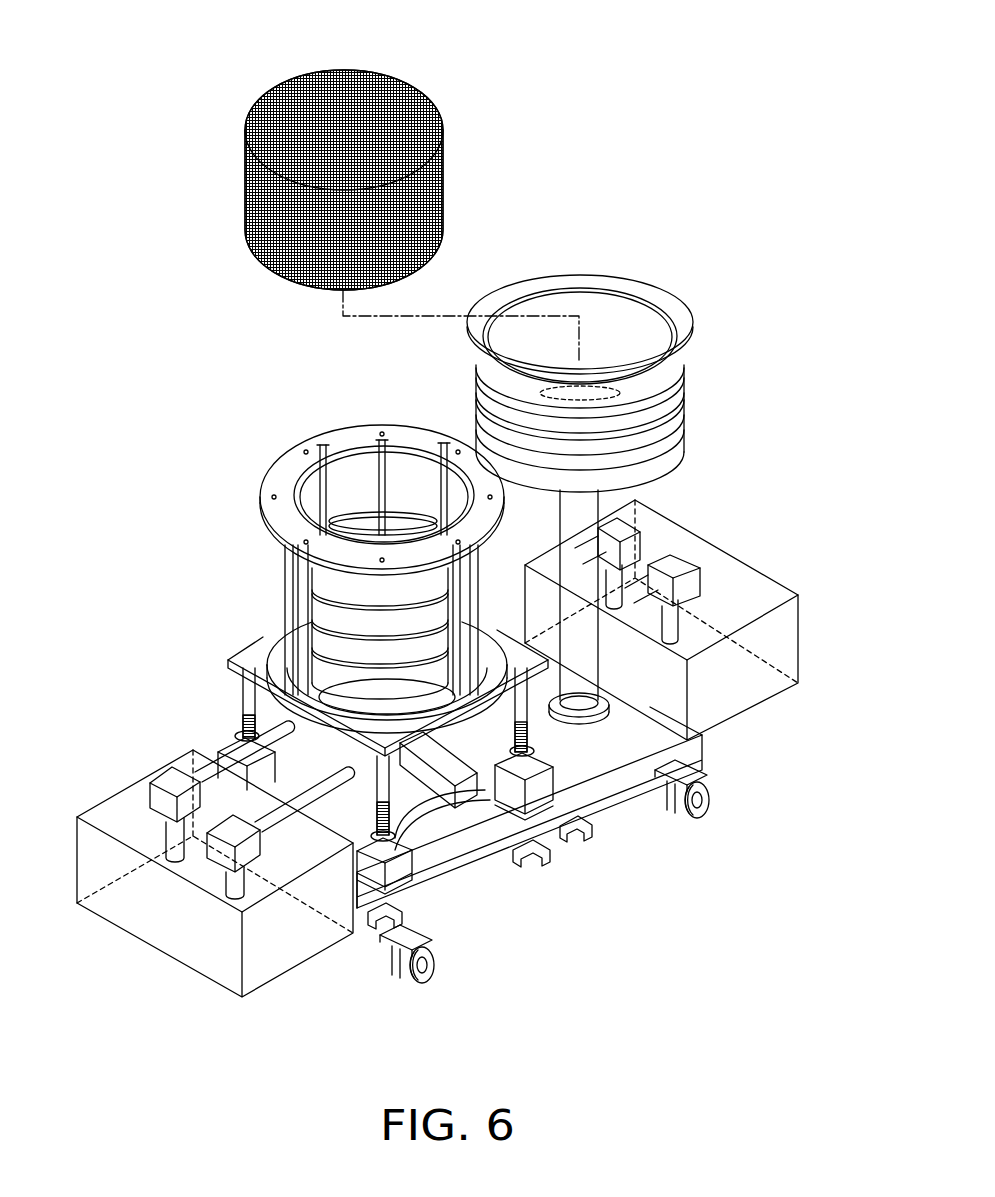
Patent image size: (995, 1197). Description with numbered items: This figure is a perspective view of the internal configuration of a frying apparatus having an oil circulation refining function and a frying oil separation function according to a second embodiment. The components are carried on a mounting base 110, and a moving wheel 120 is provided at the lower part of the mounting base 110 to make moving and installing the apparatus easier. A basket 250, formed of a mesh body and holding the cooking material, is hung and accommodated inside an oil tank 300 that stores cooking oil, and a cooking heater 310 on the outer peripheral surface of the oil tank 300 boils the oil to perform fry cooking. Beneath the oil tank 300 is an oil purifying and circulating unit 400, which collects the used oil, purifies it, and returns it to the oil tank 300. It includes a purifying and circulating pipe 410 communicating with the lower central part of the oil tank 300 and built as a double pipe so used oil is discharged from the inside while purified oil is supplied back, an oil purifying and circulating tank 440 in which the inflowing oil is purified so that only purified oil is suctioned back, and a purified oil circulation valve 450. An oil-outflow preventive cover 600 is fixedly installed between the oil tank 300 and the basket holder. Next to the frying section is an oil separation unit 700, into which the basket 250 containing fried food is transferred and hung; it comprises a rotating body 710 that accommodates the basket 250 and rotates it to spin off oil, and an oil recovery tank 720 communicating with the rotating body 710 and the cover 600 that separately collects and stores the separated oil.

The mounting base 110 is at (612, 770).
The moving wheel 120 is at (434, 970).
The basket 250 is at (295, 77).
The oil tank 300 is at (615, 357).
The cooking heater 310 is at (660, 426).
The oil purifying and circulating unit 400 is at (686, 639).
The purifying and circulating pipe 410 is at (582, 530).
The oil purifying and circulating tank 440 is at (735, 672).
The purified oil circulation valve 450 is at (686, 566).
The oil-outflow preventive cover 600 is at (413, 470).
The oil separation unit 700 is at (365, 590).
The rotating body 710 is at (372, 533).
The oil recovery tank 720 is at (110, 798).